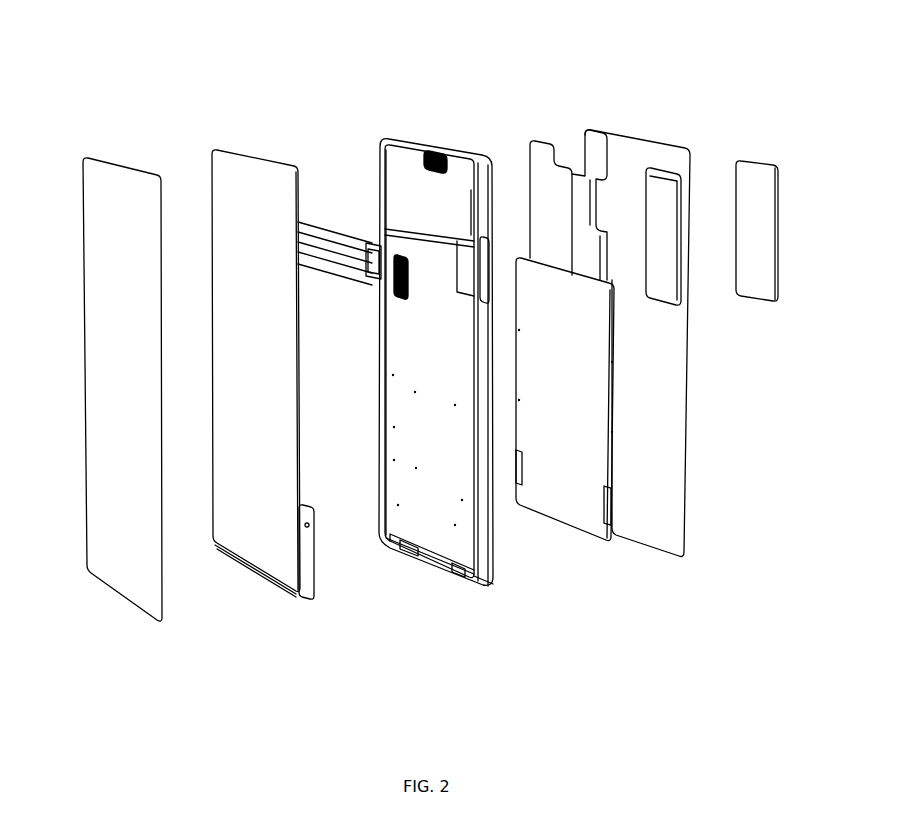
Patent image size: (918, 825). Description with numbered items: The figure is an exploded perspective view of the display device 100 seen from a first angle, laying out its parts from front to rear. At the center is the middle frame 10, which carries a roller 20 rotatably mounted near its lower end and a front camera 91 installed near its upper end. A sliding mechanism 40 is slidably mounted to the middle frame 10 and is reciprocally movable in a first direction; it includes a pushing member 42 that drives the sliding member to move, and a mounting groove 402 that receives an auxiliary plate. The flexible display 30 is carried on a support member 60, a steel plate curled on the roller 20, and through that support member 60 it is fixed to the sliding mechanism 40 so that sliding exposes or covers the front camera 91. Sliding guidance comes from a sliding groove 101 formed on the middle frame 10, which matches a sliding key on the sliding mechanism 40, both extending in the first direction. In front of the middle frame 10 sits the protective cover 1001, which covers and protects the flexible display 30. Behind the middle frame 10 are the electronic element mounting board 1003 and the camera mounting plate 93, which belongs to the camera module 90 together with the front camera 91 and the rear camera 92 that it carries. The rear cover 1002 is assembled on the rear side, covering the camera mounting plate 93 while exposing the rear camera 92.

The display device 100 is at (383, 33).
The protective cover 1001 is at (123, 200).
The flexible display 30 is at (256, 150).
The sliding mechanism 40 is at (325, 225).
The mounting groove 402 is at (360, 240).
The pushing member 42 is at (380, 300).
The support member 60 is at (290, 590).
The middle frame 10 is at (468, 178).
The sliding groove 101 is at (455, 270).
The roller 20 is at (400, 548).
The front camera 91 is at (428, 150).
The rear camera 92 is at (752, 175).
The camera mounting plate 93 is at (536, 142).
The camera module 90 is at (787, 578).
The rear cover 1002 is at (625, 150).
The electronic element mounting board 1003 is at (572, 505).